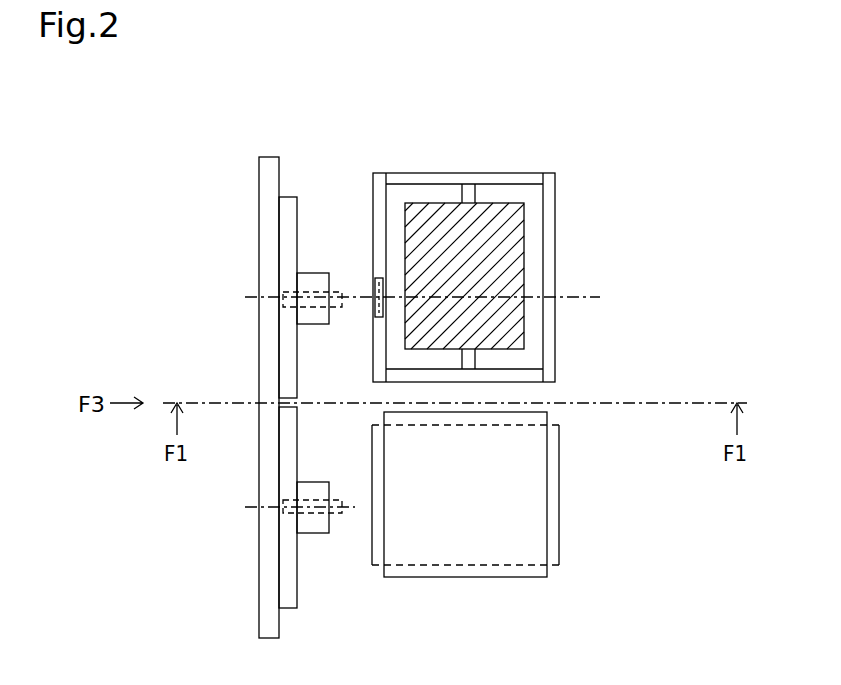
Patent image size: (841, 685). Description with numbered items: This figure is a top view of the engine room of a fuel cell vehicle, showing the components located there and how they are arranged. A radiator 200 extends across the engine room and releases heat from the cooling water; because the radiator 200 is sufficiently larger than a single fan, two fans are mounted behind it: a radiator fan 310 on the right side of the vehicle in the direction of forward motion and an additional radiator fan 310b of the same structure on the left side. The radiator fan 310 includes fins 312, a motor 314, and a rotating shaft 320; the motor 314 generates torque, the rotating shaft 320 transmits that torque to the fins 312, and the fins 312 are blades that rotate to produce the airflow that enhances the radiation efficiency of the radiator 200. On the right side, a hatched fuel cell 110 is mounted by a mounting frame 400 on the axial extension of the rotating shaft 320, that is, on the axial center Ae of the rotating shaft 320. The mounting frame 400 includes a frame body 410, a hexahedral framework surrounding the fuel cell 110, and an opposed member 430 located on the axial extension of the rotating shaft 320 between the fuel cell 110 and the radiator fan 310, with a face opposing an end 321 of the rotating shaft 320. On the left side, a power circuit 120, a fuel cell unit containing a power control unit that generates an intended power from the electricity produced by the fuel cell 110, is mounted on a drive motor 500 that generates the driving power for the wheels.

The fuel cell 110 is at (524, 228).
The power circuit 120 is at (497, 578).
The radiator 200 is at (269, 156).
The radiator fan 310 is at (273, 63).
The radiator fan 310b is at (329, 581).
The fins 312 is at (290, 197).
The motor 314 is at (316, 273).
The rotating shaft 320 is at (342, 292).
The end 321 is at (342, 306).
The mounting frame 400 is at (387, 63).
The frame body 410 is at (467, 173).
The opposed member 430 is at (373, 290).
The drive motor 500 is at (559, 512).
The axial center Ae is at (585, 297).